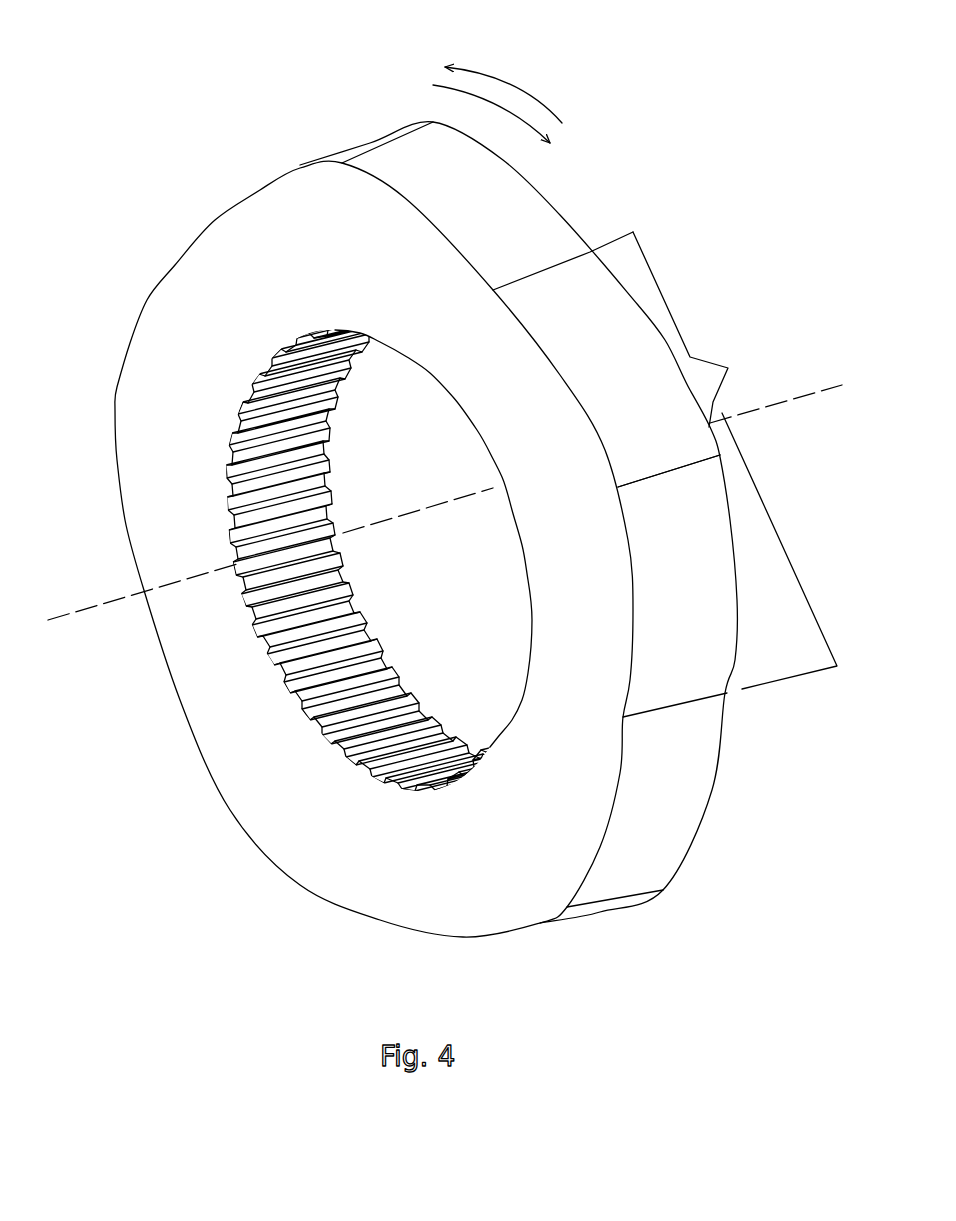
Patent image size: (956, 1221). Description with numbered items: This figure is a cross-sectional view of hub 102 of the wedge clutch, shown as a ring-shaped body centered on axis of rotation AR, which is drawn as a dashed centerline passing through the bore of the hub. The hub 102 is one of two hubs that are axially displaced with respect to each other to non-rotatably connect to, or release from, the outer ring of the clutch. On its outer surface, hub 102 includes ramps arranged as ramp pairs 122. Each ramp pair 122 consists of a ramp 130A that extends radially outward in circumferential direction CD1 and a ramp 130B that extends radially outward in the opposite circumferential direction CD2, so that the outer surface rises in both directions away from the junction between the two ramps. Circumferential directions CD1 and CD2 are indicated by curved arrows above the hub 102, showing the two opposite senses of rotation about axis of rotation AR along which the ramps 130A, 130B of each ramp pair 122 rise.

The hub 102 is at (703, 58).
The ramp pair 122 is at (728, 368).
The ramp 130A is at (599, 310).
The ramp 130B is at (704, 550).
The axis of rotation AR is at (80, 607).
The circumferential direction CD1 is at (433, 85).
The circumferential direction CD2 is at (508, 77).